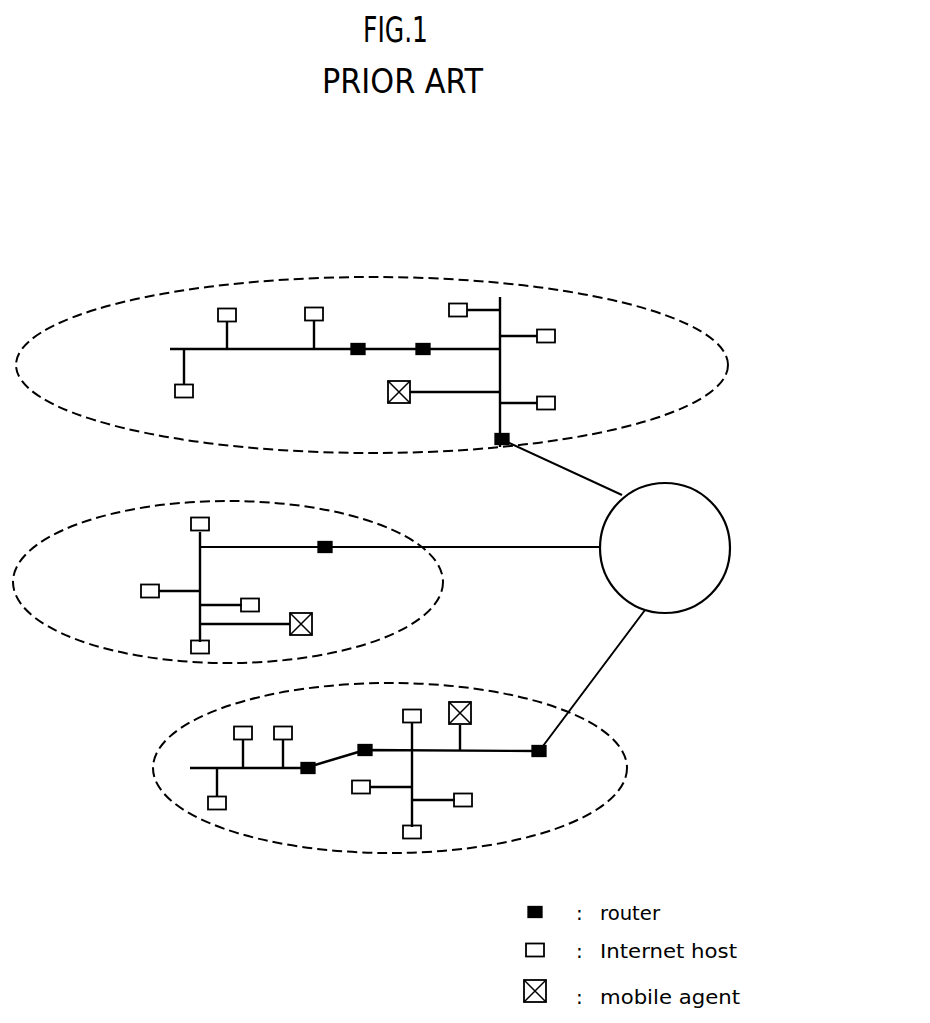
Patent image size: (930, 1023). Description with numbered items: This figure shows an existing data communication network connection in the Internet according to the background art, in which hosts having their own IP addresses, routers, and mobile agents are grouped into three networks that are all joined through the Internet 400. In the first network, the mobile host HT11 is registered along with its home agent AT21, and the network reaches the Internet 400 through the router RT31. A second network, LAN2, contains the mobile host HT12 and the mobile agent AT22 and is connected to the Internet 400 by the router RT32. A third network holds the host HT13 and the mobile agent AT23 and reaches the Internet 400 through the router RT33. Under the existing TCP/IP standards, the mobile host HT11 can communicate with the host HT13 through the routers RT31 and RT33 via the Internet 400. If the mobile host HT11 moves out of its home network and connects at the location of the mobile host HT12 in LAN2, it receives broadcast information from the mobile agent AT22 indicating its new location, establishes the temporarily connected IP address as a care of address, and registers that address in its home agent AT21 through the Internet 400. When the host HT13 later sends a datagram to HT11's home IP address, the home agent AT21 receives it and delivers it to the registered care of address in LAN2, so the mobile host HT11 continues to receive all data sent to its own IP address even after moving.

The mobile host HT11 is at (230, 306).
The home agent AT21 is at (388, 392).
The router RT31 is at (495, 440).
The Internet 400 is at (673, 613).
The LAN2 network LAN2 is at (106, 652).
The mobile host HT12 is at (141, 592).
The router RT32 is at (334, 550).
The mobile agent AT22 is at (315, 622).
The host HT13 is at (226, 803).
The mobile agent AT23 is at (472, 712).
The router RT33 is at (538, 760).